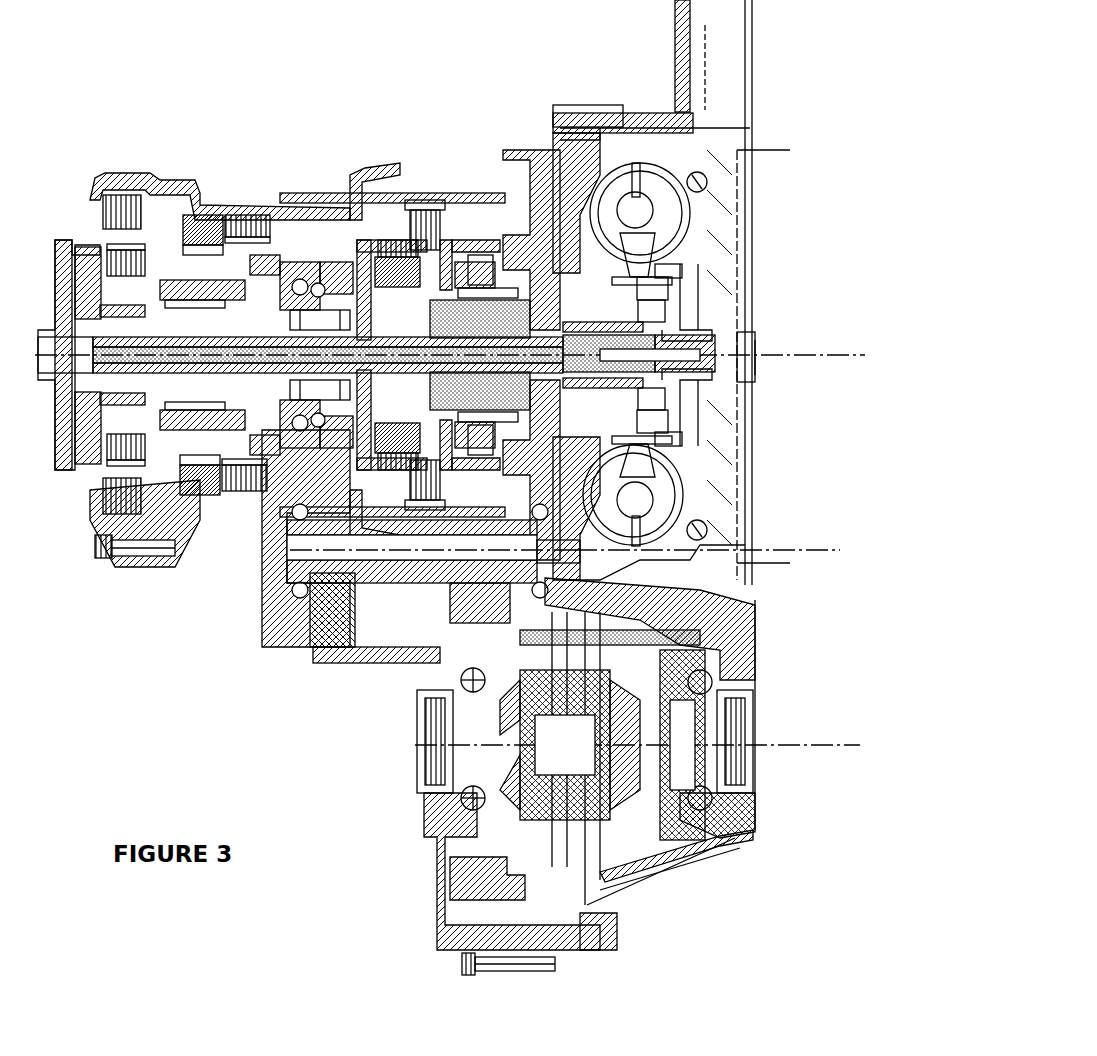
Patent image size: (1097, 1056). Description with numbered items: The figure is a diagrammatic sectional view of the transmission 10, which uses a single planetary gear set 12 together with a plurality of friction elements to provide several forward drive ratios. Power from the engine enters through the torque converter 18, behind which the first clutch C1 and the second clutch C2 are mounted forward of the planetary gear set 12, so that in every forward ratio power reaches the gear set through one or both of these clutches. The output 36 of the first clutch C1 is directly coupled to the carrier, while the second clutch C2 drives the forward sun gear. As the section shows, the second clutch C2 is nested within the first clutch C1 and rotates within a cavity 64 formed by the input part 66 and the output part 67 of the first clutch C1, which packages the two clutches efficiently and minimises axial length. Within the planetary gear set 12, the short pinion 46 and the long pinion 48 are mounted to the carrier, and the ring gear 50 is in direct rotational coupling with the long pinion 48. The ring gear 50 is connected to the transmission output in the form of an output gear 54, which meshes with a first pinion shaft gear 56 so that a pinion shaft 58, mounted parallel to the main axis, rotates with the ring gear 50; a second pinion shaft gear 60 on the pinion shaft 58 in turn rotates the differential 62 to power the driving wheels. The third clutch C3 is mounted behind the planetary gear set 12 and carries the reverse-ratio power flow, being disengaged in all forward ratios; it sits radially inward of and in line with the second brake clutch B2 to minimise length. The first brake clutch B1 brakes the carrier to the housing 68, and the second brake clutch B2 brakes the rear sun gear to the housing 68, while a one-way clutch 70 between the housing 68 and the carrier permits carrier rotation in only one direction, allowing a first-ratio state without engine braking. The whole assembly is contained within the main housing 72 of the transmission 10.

The transmission 10 is at (93, 128).
The planetary gear set 12 is at (173, 250).
The torque converter 18 is at (670, 178).
The output of the first clutch 36 is at (380, 248).
The short pinion 46 is at (218, 428).
The long pinion 48 is at (232, 268).
The ring gear 50 is at (262, 275).
The output gear 54 is at (330, 262).
The first pinion shaft gear 56 is at (330, 637).
The pinion shaft 58 is at (402, 565).
The second pinion shaft gear 60 is at (472, 612).
The differential 62 is at (485, 642).
The cavity 64 is at (455, 215).
The input part of the first clutch 66 is at (470, 215).
The output part of the first clutch 67 is at (368, 215).
The housing 68 is at (188, 183).
The one-way clutch 70 is at (212, 198).
The main housing 72 is at (485, 225).
The first brake clutch B1 is at (258, 275).
The second brake clutch B2 is at (118, 210).
The first clutch C1 is at (424, 215).
The second clutch C2 is at (393, 222).
The third clutch C3 is at (118, 260).